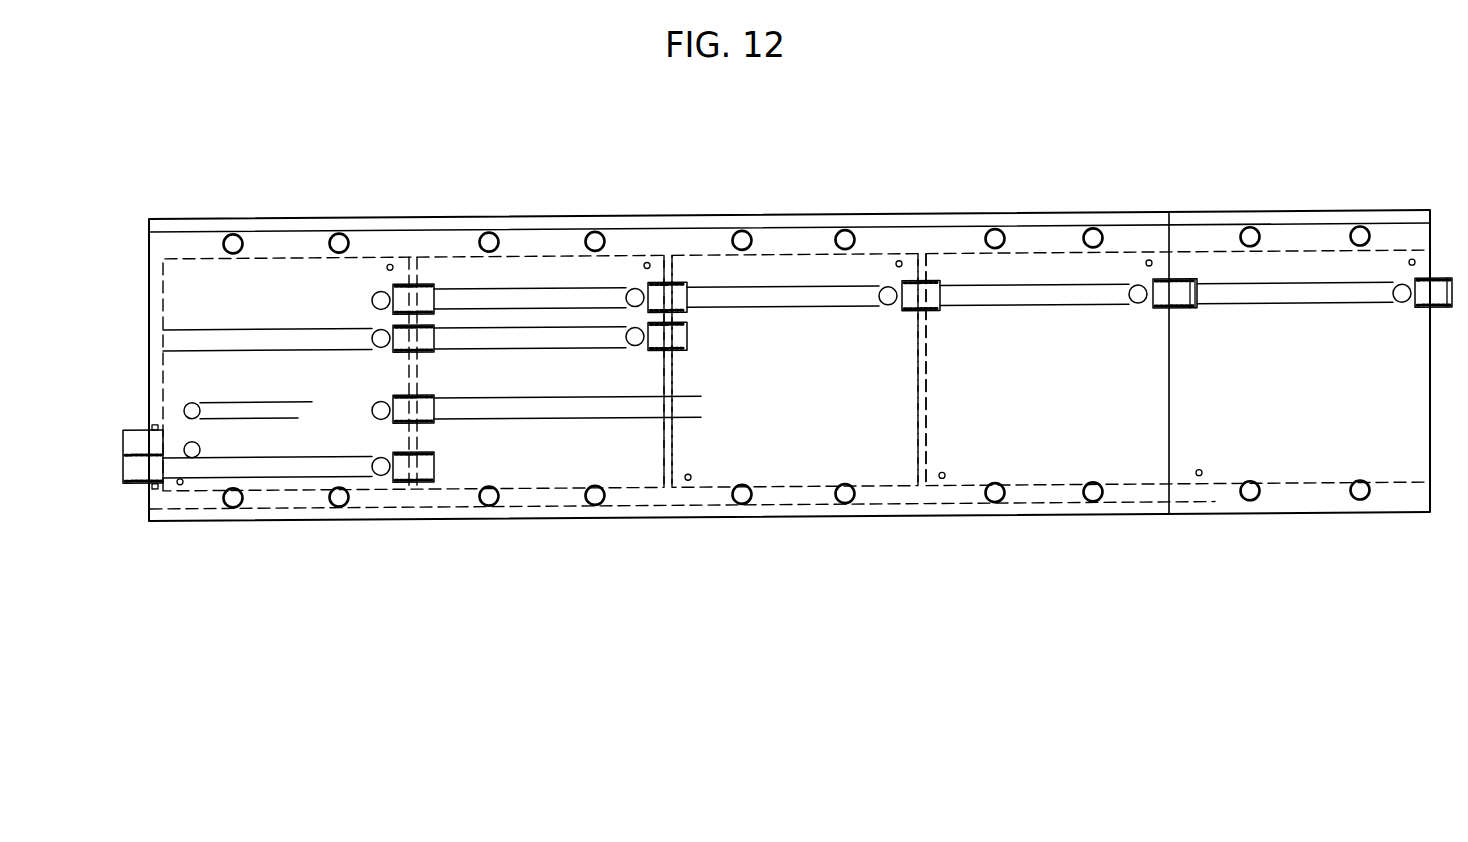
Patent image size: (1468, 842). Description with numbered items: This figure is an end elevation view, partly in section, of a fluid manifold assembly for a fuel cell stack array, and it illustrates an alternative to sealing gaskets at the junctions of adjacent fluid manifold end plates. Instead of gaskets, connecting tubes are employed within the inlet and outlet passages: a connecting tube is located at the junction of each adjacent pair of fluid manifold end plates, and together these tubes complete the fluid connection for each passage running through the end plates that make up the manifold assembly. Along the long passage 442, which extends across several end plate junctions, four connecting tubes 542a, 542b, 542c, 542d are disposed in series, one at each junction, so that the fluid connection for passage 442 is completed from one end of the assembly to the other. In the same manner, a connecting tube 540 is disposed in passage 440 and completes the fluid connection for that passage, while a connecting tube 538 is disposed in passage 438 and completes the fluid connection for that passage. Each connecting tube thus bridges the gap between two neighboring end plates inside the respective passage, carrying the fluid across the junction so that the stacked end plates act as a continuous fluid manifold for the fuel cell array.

The passage 438 is at (485, 410).
The passage 440 is at (518, 335).
The passage 442 is at (765, 295).
The connecting tube 538 is at (406, 412).
The connecting tube 540 is at (393, 340).
The connecting tube 542a is at (405, 295).
The connecting tube 542b is at (673, 295).
The connecting tube 542c is at (925, 290).
The connecting tube 542d is at (1177, 290).